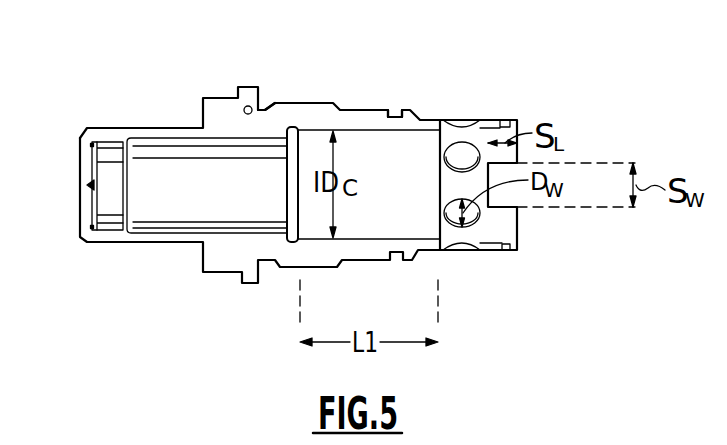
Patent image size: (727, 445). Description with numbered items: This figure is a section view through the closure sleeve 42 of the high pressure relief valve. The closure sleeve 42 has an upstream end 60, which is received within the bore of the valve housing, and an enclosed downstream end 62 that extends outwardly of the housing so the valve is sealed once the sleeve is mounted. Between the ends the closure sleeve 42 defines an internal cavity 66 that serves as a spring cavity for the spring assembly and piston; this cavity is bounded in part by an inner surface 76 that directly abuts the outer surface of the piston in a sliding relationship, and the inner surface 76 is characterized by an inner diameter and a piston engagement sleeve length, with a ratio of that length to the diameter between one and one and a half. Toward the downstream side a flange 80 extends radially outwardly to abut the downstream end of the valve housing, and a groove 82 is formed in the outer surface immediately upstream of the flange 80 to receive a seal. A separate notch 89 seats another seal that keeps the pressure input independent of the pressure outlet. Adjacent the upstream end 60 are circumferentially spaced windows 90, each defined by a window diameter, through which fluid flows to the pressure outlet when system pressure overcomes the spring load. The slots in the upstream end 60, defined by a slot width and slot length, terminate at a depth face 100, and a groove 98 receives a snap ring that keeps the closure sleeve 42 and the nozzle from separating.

The closure sleeve 42 is at (459, 80).
The upstream end 60 is at (516, 243).
The downstream end 62 is at (80, 237).
The internal cavity 66 is at (372, 241).
The inner surface 76 is at (363, 134).
The flange 80 is at (250, 93).
The groove 82 is at (267, 110).
The notch 89 is at (395, 108).
The windows 90 is at (463, 158).
The groove 98 is at (505, 252).
The depth face 100 is at (487, 182).